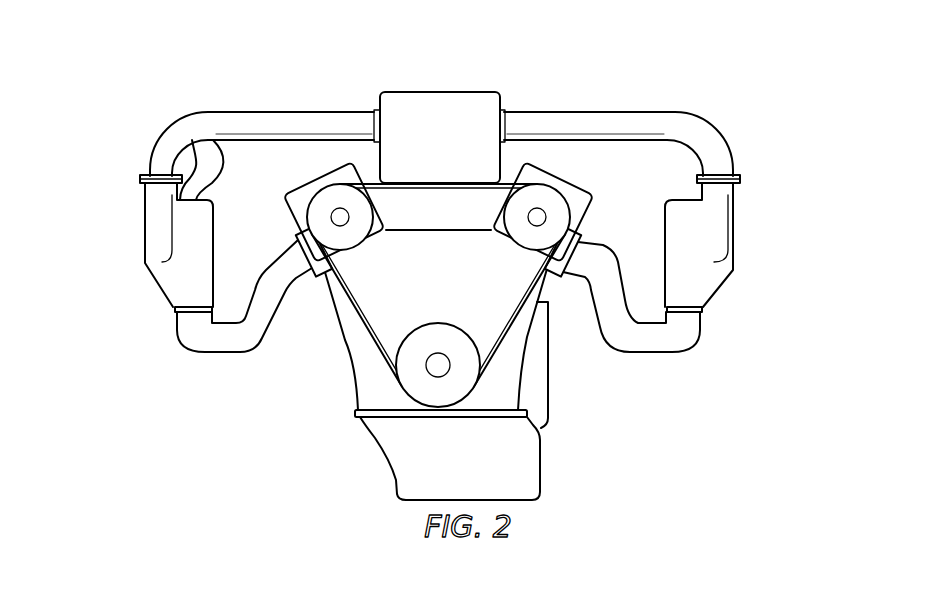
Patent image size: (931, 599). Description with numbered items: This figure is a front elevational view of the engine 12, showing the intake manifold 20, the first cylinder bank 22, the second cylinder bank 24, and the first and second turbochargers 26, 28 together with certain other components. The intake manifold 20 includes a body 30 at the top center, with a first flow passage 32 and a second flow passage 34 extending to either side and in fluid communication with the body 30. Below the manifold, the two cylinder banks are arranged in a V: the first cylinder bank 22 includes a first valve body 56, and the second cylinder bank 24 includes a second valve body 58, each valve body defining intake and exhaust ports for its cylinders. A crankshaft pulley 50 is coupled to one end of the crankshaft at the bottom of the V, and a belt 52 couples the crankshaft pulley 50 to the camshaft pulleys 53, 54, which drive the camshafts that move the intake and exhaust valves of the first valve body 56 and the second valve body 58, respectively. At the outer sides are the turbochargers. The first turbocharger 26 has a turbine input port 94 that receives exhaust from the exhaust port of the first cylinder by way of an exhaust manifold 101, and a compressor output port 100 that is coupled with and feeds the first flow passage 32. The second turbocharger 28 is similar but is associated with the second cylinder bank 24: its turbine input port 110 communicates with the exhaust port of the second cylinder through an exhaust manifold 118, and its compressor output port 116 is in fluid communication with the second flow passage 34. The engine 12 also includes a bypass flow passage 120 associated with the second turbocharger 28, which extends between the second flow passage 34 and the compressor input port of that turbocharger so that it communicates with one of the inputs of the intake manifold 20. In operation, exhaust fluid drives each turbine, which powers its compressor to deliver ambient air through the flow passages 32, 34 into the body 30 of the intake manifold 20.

The engine 12 is at (325, 60).
The intake manifold 20 is at (450, 88).
The body 30 is at (428, 151).
The first cylinder bank 22 is at (552, 219).
The second cylinder bank 24 is at (325, 219).
The first turbocharger 26 is at (746, 291).
The second turbocharger 28 is at (132, 291).
The first flow passage 32 is at (613, 111).
The second flow passage 34 is at (264, 111).
The crankshaft pulley 50 is at (458, 324).
The belt 52 is at (375, 312).
The camshaft pulley 53 is at (560, 187).
The camshaft pulley 54 is at (318, 187).
The first valve body 56 is at (490, 243).
The second valve body 58 is at (388, 243).
The turbine input port 94 is at (686, 318).
The compressor output port 100 is at (718, 173).
The exhaust manifold 101 is at (650, 353).
The turbine input port 110 is at (190, 318).
The compressor output port 116 is at (161, 173).
The exhaust manifold 118 is at (228, 353).
The bypass flow passage 120 is at (222, 176).